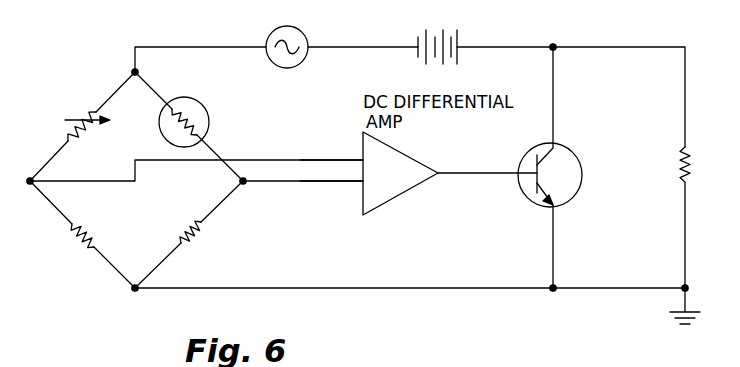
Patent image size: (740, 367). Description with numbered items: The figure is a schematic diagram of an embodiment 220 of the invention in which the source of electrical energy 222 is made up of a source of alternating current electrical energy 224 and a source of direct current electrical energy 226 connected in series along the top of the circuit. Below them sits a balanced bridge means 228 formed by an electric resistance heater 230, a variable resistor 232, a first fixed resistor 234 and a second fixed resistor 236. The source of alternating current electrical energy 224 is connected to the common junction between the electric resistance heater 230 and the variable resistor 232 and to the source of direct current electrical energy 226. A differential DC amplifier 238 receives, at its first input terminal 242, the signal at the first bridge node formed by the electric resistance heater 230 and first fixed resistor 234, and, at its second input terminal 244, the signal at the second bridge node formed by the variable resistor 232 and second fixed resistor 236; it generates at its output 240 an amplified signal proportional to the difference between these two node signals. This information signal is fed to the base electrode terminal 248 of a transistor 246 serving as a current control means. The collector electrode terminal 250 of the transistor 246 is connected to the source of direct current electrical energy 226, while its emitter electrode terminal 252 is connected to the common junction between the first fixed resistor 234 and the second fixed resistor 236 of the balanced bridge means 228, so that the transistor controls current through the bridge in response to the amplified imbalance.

The embodiment 220 is at (537, 24).
The source of electrical energy 222 is at (324, 26).
The source of alternating current electrical energy 224 is at (272, 38).
The source of direct current electrical energy 226 is at (458, 35).
The balanced bridge means 228 is at (230, 197).
The electric resistance heater 230 is at (184, 107).
The variable resistor 232 is at (92, 120).
The first fixed resistor 234 is at (190, 236).
The second fixed resistor 236 is at (59, 241).
The differential DC amplifier 238 is at (398, 147).
The output 240 is at (430, 173).
The first input terminal 242 is at (362, 188).
The second input terminal 244 is at (360, 157).
The transistor 246 is at (550, 148).
The base electrode terminal 248 is at (526, 181).
The collector electrode terminal 250 is at (557, 148).
The emitter electrode terminal 252 is at (556, 207).